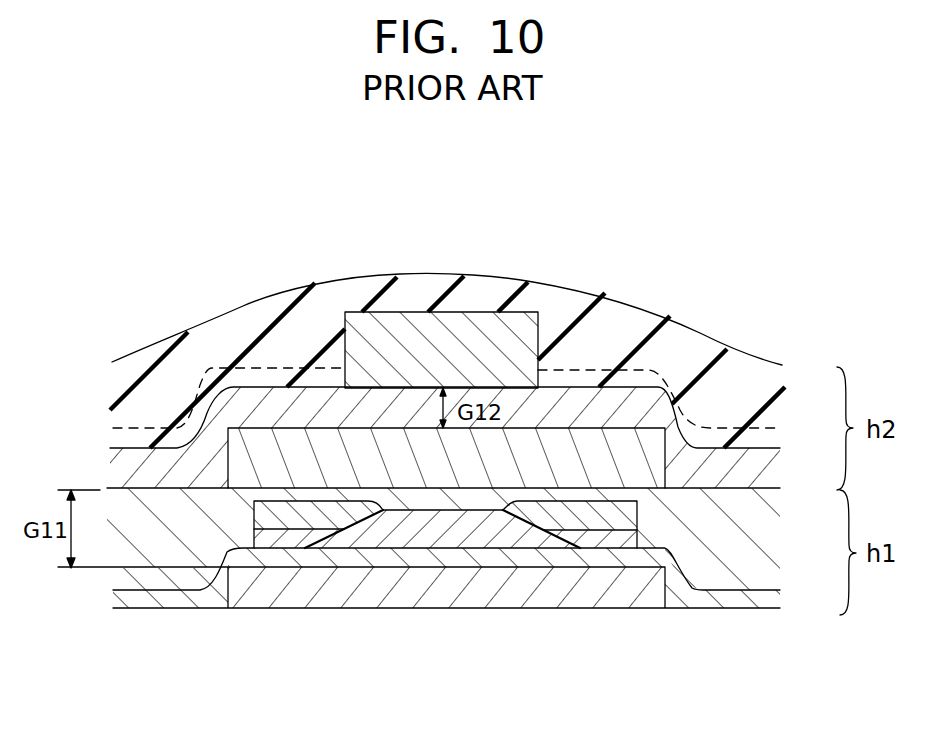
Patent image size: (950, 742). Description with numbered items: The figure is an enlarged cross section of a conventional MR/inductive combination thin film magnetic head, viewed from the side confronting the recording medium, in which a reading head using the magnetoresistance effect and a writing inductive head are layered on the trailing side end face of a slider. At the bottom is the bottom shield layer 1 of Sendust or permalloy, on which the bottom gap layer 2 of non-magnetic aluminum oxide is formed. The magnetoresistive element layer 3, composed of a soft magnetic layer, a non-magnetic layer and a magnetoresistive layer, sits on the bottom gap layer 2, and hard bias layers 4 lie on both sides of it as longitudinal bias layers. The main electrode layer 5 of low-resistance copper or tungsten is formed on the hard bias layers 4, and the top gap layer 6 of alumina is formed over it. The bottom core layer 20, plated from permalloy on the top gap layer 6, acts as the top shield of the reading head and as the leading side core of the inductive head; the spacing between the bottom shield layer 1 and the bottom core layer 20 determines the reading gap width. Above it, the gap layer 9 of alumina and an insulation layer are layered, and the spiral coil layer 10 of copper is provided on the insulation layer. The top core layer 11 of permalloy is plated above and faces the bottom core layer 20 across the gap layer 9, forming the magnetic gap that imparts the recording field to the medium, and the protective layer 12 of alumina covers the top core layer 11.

The bottom shield layer 1 is at (565, 597).
The bottom gap layer 2 is at (770, 597).
The magnetoresistive element layer 3 is at (465, 530).
The hard bias layers 4 is at (637, 537).
The main electrode layer 5 is at (637, 515).
The top gap layer 6 is at (760, 503).
The gap layer 9 is at (135, 463).
The coil layer 10 is at (300, 360).
The top core layer 11 is at (477, 318).
The protective layer 12 is at (385, 296).
The bottom core layer 20 is at (643, 465).